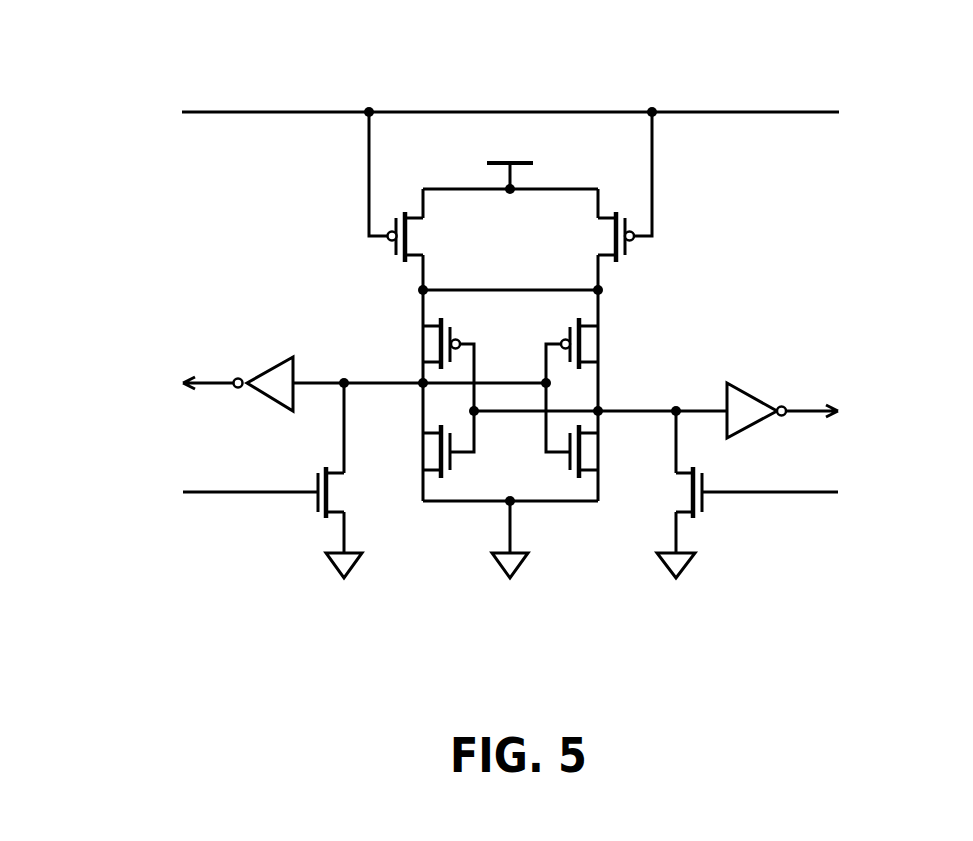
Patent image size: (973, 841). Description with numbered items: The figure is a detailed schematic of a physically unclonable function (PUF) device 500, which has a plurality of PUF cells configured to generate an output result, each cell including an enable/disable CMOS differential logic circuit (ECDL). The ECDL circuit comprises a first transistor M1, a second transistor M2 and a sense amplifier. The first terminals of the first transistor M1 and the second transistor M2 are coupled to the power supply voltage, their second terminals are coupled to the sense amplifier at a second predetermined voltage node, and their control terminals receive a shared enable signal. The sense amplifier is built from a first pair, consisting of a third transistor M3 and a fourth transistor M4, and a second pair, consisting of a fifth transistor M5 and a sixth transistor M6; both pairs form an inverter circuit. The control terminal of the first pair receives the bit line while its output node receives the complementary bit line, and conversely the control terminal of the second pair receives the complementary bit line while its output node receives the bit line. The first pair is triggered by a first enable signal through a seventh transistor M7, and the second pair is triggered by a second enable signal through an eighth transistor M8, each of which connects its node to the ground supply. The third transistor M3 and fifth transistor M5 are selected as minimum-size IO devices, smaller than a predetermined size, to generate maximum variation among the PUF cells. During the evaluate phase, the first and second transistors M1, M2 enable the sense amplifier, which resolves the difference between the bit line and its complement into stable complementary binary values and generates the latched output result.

The physically unclonable function (PUF) device 500 is at (569, 386).
The first transistor M1 is at (421, 237).
The second transistor M2 is at (600, 237).
The third transistor M3 is at (433, 385).
The fourth transistor M4 is at (421, 451).
The fifth transistor M5 is at (586, 385).
The sixth transistor M6 is at (598, 451).
The seventh transistor M7 is at (345, 492).
The eighth transistor M8 is at (673, 492).